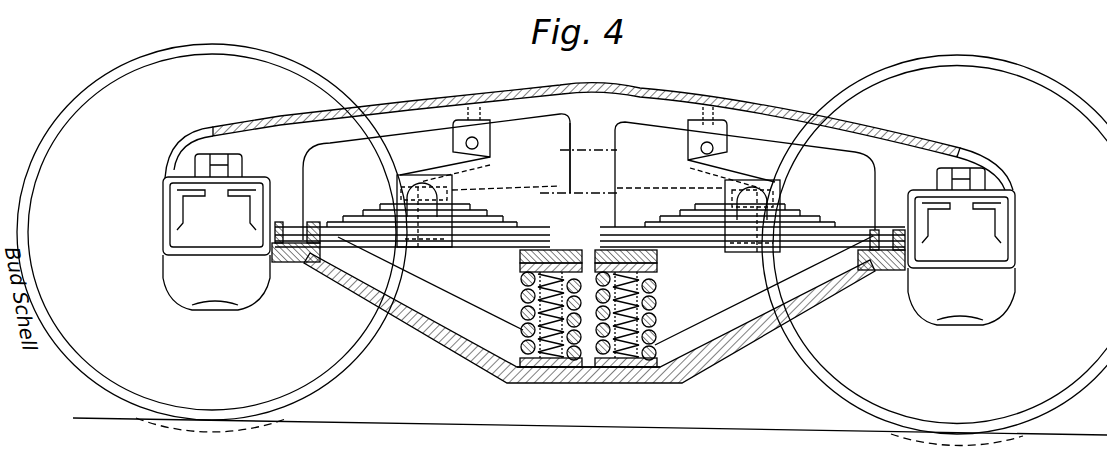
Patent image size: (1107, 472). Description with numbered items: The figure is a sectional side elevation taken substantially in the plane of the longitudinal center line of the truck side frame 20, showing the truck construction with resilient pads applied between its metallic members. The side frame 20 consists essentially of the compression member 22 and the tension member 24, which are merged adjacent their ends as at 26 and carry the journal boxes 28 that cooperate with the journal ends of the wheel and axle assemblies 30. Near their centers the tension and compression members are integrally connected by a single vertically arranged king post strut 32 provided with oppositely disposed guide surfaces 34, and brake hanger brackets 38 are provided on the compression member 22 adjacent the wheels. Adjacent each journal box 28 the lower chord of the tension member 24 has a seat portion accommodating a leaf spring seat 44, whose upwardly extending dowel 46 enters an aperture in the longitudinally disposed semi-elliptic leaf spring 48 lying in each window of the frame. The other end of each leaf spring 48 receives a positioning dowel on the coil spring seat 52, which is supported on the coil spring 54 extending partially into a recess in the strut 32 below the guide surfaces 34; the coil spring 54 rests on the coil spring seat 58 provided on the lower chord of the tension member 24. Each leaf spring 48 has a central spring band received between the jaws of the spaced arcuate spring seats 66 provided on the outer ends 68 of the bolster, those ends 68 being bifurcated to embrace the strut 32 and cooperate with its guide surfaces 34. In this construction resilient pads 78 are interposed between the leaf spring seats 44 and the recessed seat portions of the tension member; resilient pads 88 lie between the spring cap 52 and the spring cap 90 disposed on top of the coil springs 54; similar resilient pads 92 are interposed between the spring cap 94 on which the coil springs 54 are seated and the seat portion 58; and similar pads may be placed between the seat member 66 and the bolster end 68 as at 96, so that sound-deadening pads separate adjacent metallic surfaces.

The truck side frame 20 is at (585, 97).
The compression member 22 is at (522, 101).
The tension member 24 is at (737, 323).
The merged ends 26 is at (932, 148).
The journal boxes 28 is at (173, 258).
The wheel and axle assemblies 30 is at (117, 93).
The king post strut 32 is at (591, 140).
The guide surfaces 34 is at (615, 138).
The brake hanger brackets 38 is at (467, 142).
The leaf spring seat 44 is at (270, 242).
The spring end clip 46 is at (300, 225).
The semi-elliptic leaf spring 48 is at (380, 243).
The coil spring seat 52 is at (522, 252).
The coil spring 54 is at (521, 308).
The coil spring seat 58 is at (548, 382).
The arcuate spring seats 66 is at (786, 204).
The outer ends of the bolster 68 is at (655, 160).
The resilient pads 78 is at (282, 262).
The resilient pads 88 is at (522, 268).
The spring cap 90 is at (523, 282).
The resilient pads 92 is at (512, 383).
The spring cap 94 is at (505, 362).
The resilient pads 96 is at (772, 222).